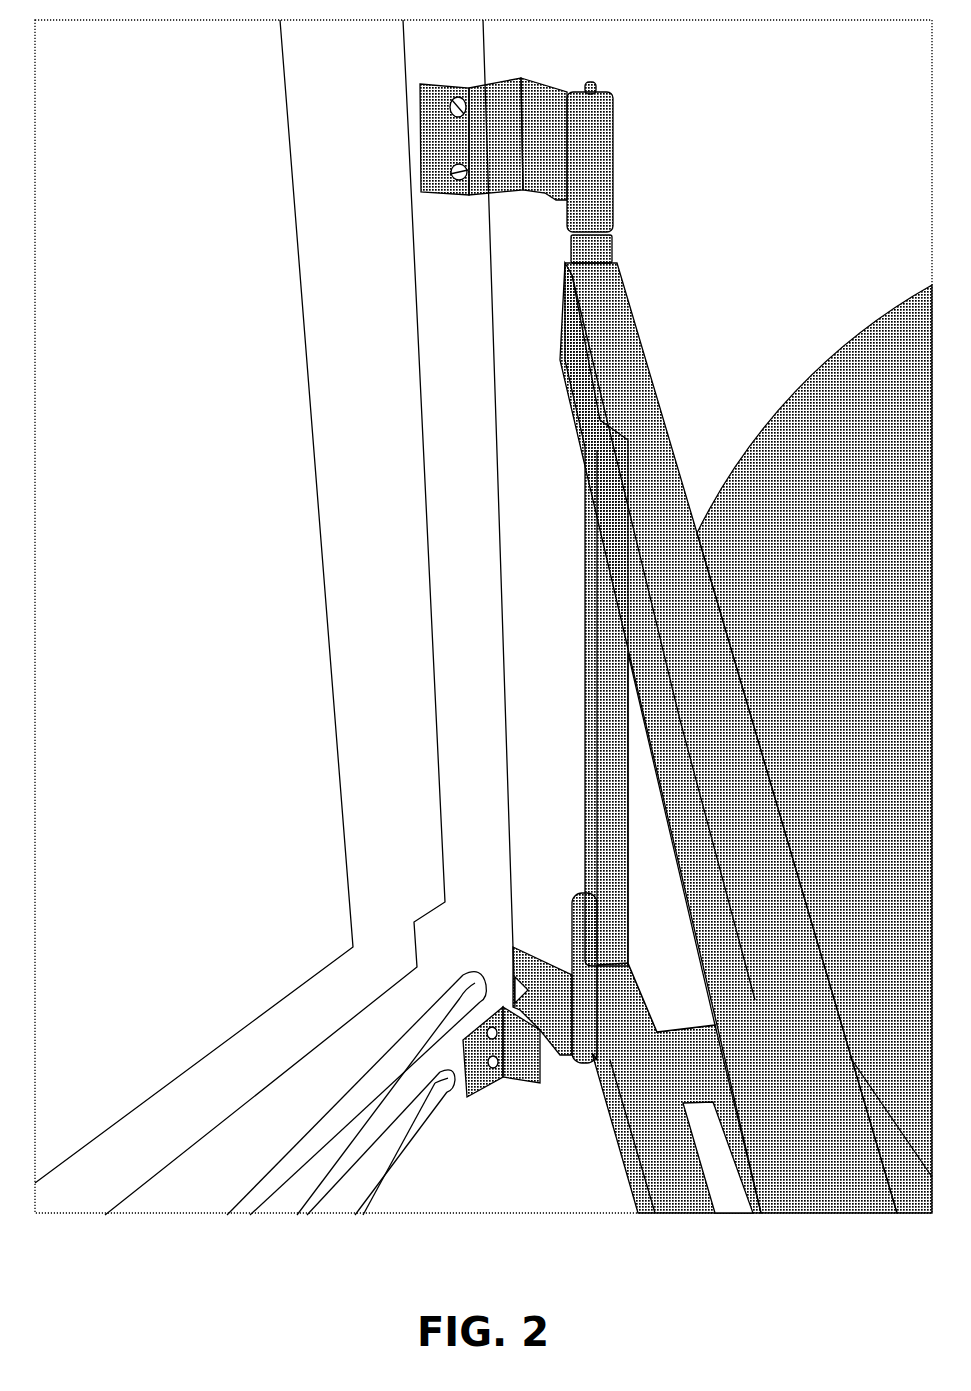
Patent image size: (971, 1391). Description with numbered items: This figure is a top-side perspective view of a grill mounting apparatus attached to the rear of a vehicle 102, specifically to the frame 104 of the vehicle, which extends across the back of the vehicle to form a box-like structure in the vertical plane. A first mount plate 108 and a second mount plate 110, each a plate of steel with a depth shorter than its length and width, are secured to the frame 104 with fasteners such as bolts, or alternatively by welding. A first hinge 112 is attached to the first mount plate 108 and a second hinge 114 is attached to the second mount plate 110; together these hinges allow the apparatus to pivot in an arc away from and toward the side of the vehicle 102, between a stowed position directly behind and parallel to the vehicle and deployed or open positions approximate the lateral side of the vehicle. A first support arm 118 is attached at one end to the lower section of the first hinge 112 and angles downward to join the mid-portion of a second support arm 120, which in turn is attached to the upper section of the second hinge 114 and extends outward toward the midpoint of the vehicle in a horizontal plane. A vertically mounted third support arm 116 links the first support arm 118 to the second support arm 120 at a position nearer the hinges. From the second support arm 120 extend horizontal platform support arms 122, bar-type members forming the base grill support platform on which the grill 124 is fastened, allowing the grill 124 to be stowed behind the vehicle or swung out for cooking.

The vehicle 102 is at (198, 537).
The frame 104 is at (380, 1180).
The first mount plate 108 is at (500, 195).
The second mount plate 110 is at (523, 1083).
The first hinge 112 is at (613, 224).
The second hinge 114 is at (572, 898).
The third support arm 116 is at (585, 630).
The first support arm 118 is at (652, 350).
The second support arm 120 is at (626, 1172).
The platform support arms 122 is at (660, 1030).
The grill 124 is at (818, 366).